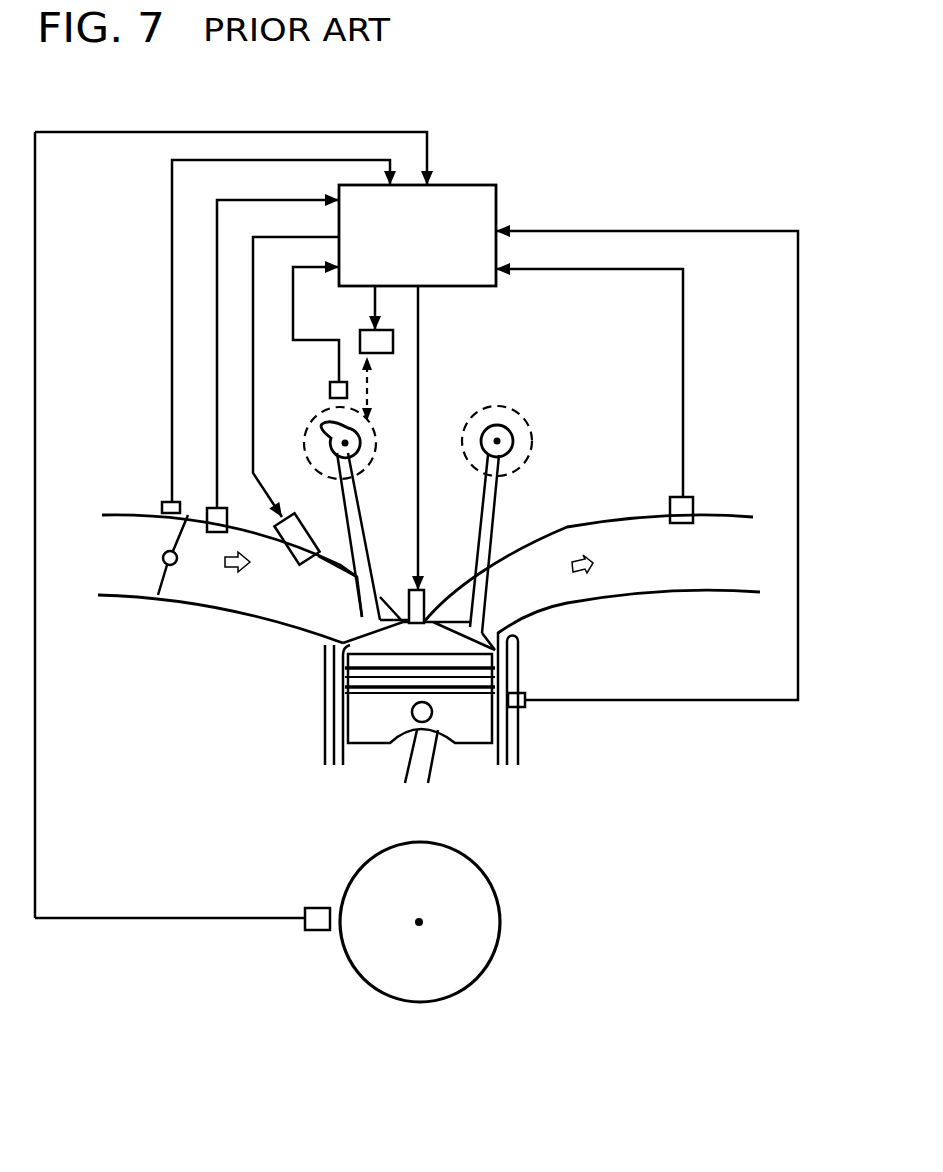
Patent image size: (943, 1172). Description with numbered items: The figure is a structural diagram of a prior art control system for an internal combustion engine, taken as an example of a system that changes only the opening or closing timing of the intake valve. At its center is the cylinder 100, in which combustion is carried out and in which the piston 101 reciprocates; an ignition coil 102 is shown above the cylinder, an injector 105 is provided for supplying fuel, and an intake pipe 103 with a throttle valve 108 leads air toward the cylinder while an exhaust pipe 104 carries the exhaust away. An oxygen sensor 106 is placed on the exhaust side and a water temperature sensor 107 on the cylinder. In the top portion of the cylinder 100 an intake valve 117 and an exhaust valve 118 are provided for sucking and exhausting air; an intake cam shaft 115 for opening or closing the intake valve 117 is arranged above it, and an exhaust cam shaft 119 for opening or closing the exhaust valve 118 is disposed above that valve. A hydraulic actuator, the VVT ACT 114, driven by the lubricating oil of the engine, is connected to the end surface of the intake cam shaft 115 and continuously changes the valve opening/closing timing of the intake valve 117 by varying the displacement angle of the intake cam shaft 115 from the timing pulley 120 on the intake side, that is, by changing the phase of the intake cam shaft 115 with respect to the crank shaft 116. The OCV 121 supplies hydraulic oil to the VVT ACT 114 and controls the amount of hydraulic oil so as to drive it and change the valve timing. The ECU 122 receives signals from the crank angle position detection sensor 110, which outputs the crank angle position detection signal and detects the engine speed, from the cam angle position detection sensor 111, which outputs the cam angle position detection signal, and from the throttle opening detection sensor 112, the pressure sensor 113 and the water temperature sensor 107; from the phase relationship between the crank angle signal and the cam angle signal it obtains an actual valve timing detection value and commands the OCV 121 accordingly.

The cylinder 100 is at (525, 735).
The piston 101 is at (473, 755).
The ignition coil 102 is at (430, 598).
The intake pipe 103 is at (210, 604).
The exhaust pipe 104 is at (669, 591).
The injector 105 is at (284, 548).
The O2 sensor 106 is at (693, 500).
The water temperature sensor 107 is at (530, 706).
The throttle valve 108 is at (163, 560).
The crank angle position detection sensor 110 is at (312, 930).
The cam angle position detection sensor 111 is at (330, 389).
The throttle opening detection sensor 112 is at (163, 503).
The pressure sensor 113 is at (212, 506).
The VVT ACT 114 is at (296, 401).
The intake cam shaft 115 is at (348, 459).
The crank shaft 116 is at (425, 921).
The intake valve 117 is at (345, 632).
The exhaust valve 118 is at (515, 641).
The exhaust cam shaft 119 is at (506, 422).
The timing pulley 120 is at (372, 420).
The OCV 121 is at (360, 346).
The ECU 122 is at (497, 205).